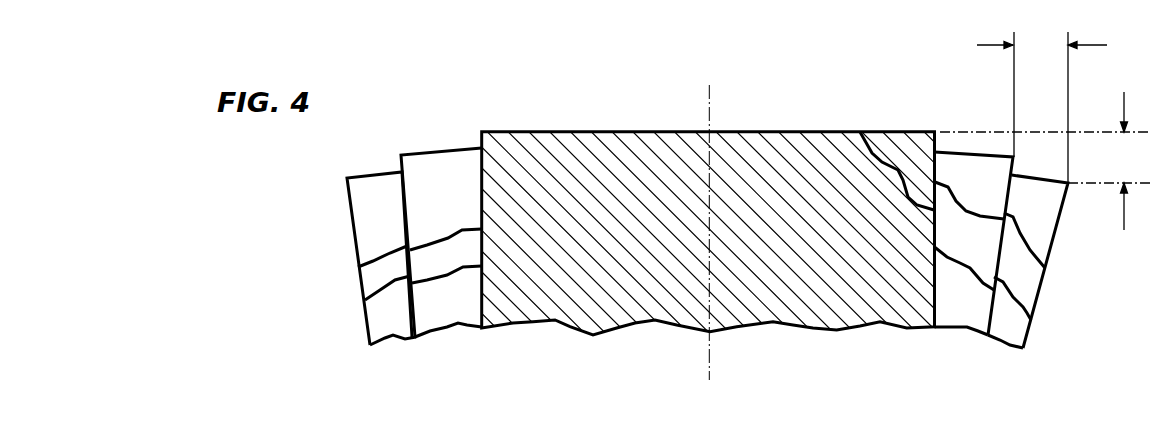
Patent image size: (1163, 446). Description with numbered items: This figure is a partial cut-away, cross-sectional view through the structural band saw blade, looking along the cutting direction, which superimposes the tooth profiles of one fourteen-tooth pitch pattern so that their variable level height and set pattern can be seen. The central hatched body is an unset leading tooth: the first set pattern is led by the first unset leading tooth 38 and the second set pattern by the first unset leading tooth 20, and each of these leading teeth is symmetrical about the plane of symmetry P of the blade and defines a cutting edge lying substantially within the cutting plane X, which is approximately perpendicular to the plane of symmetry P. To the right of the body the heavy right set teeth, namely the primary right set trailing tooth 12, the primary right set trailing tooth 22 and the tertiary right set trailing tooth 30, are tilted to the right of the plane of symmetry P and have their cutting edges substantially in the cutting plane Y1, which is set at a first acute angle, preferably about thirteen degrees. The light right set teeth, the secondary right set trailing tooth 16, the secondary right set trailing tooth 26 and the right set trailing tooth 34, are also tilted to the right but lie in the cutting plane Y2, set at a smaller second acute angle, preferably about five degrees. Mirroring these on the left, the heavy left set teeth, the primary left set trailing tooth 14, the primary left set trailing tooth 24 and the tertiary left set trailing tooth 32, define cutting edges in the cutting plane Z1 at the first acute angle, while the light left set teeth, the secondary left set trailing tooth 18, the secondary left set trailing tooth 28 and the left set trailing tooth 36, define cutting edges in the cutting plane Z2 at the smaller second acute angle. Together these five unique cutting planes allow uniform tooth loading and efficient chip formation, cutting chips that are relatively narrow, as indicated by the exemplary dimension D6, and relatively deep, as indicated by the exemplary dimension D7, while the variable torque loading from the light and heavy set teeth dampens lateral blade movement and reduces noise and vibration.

The primary right set trailing tooth 12 is at (1007, 320).
The primary left set trailing tooth 14 is at (393, 322).
The secondary right set trailing tooth 16 is at (948, 307).
The secondary left set trailing tooth 18 is at (460, 302).
The first unset leading tooth 20 is at (895, 150).
The primary right set trailing tooth 22 is at (1027, 282).
The primary left set trailing tooth 24 is at (372, 280).
The secondary right set trailing tooth 26 is at (972, 240).
The secondary left set trailing tooth 28 is at (430, 262).
The tertiary right set trailing tooth 30 is at (1042, 223).
The tertiary left set trailing tooth 32 is at (370, 225).
The right set trailing tooth 34 is at (967, 173).
The left set trailing tooth 36 is at (448, 177).
The first unset leading tooth 38 is at (808, 162).
The cutting plane X is at (700, 210).
The plane of symmetry P is at (709, 352).
The cutting plane Z1 is at (373, 170).
The cutting plane Z2 is at (423, 150).
The cutting plane Y1 is at (1042, 177).
The cutting plane Y2 is at (988, 153).
The dimension D6 is at (1042, 107).
The dimension D7 is at (1045, 161).